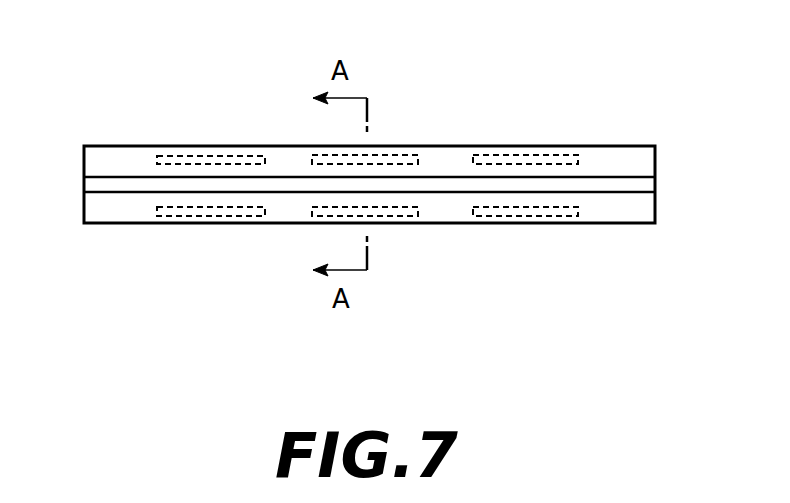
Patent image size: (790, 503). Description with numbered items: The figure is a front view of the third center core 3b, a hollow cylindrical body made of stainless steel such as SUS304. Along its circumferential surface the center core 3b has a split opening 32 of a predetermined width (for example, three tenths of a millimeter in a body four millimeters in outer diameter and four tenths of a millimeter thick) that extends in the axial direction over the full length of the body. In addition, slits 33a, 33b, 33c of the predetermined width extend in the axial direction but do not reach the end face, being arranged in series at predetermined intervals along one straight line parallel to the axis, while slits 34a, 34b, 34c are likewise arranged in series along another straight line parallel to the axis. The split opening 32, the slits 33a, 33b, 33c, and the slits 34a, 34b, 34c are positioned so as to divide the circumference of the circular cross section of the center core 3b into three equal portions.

The third center core 3b is at (410, 191).
The split opening 32 is at (97, 192).
The slit 33a is at (205, 160).
The slit 33b is at (385, 162).
The slit 33c is at (530, 156).
The slit 34a is at (195, 212).
The slit 34b is at (333, 212).
The slit 34c is at (503, 212).